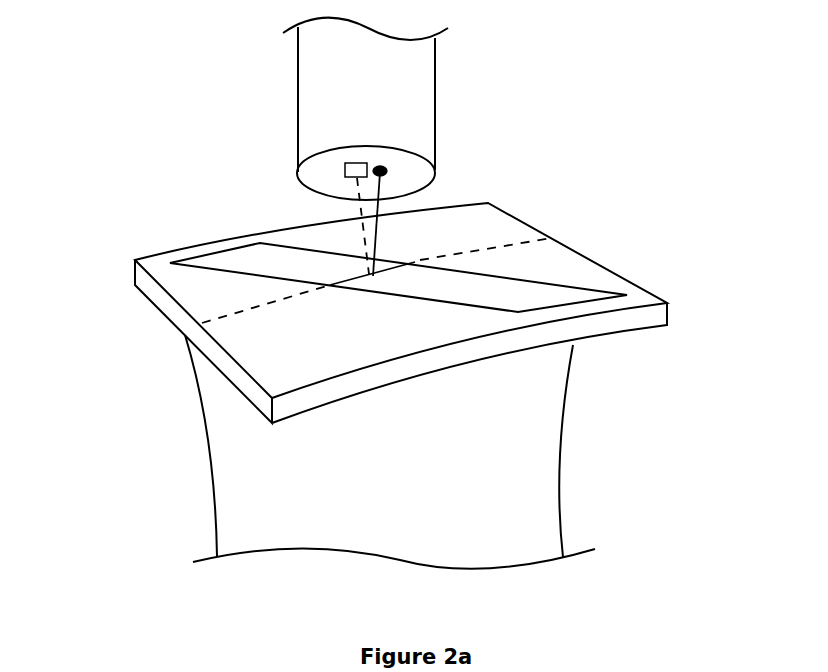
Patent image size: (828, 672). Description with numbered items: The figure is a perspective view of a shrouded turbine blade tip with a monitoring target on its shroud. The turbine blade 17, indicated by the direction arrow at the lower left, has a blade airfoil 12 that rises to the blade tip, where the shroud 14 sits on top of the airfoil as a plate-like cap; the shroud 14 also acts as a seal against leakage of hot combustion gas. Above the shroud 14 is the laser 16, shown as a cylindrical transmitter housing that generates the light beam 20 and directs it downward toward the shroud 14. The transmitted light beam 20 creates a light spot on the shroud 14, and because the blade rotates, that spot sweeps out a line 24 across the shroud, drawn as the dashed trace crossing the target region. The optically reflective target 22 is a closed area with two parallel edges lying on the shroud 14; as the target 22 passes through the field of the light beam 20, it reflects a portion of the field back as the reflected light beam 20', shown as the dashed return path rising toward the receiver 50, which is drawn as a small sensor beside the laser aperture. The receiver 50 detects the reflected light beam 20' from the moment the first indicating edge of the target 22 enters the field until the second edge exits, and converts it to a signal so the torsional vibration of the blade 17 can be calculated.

The blade airfoil 12 is at (562, 455).
The shroud 14 is at (660, 315).
The laser 16 is at (388, 171).
The turbine blade 17 is at (165, 450).
The light beam 20 is at (398, 238).
The reflected light beam 20' is at (268, 226).
The optically reflective target 22 is at (487, 273).
The line 24 is at (238, 308).
The receiver 50 is at (345, 170).